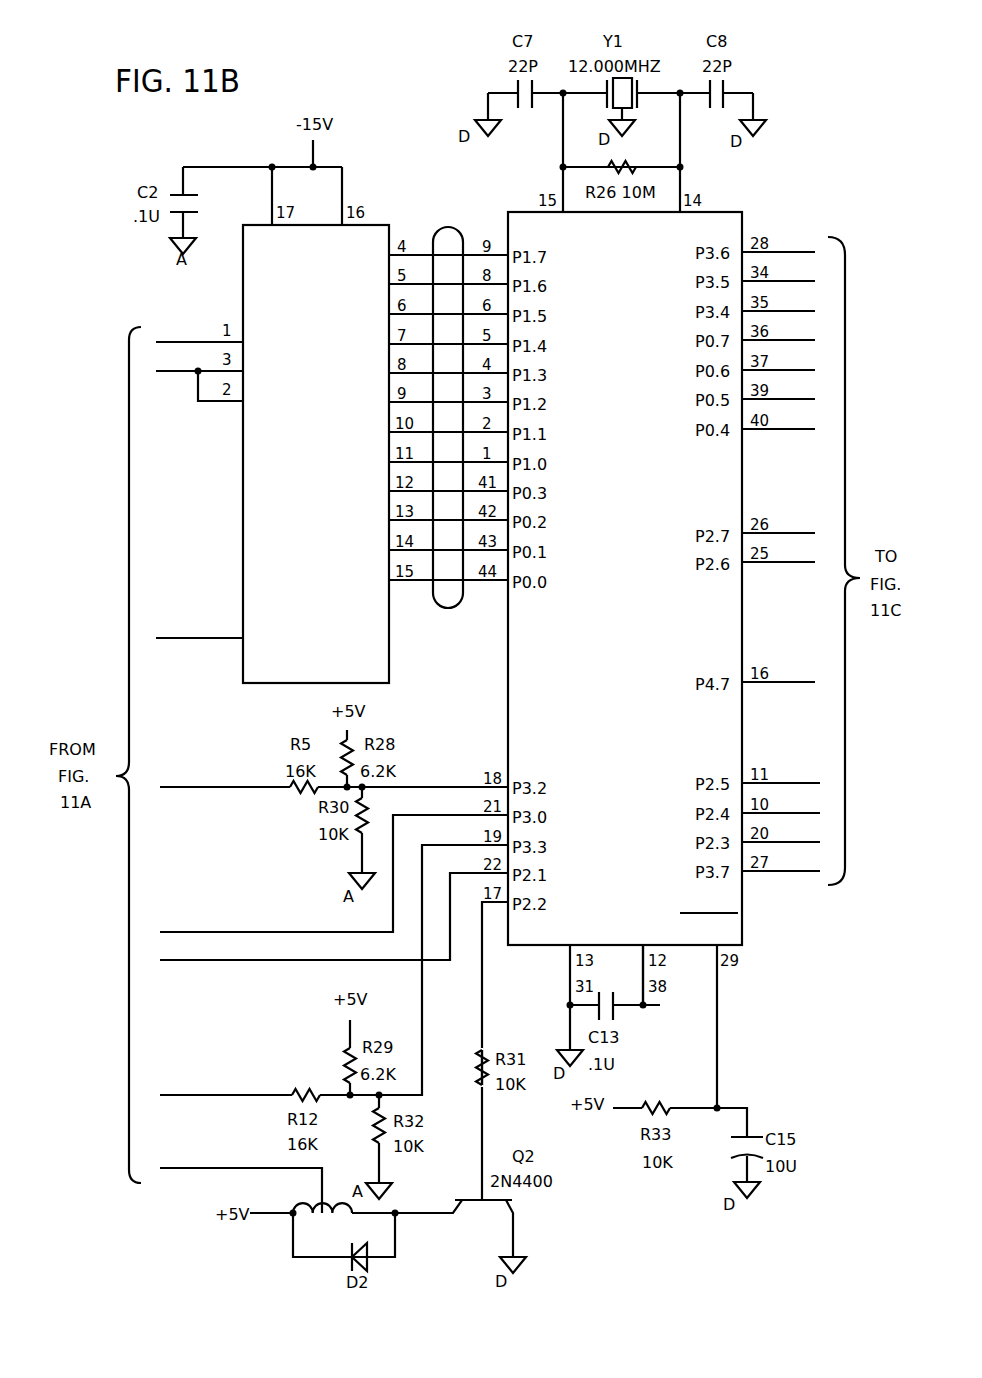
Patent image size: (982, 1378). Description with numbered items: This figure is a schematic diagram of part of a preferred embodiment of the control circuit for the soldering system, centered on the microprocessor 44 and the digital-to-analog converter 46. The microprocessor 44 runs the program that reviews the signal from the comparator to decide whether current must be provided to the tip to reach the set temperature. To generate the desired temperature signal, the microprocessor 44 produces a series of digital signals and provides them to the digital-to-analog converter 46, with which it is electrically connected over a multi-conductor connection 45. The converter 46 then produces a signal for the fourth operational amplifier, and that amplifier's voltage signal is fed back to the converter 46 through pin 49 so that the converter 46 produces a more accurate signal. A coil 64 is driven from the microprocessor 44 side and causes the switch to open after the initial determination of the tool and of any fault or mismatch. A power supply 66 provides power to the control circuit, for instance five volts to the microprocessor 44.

The microprocessor 44 is at (728, 212).
The data bus cable between DAC and microcontroller 45 is at (449, 228).
The digital-to-analog converter 46 is at (389, 637).
The pin 49 is at (245, 636).
The coil 64 is at (328, 1215).
The power supply 66 is at (645, 1005).